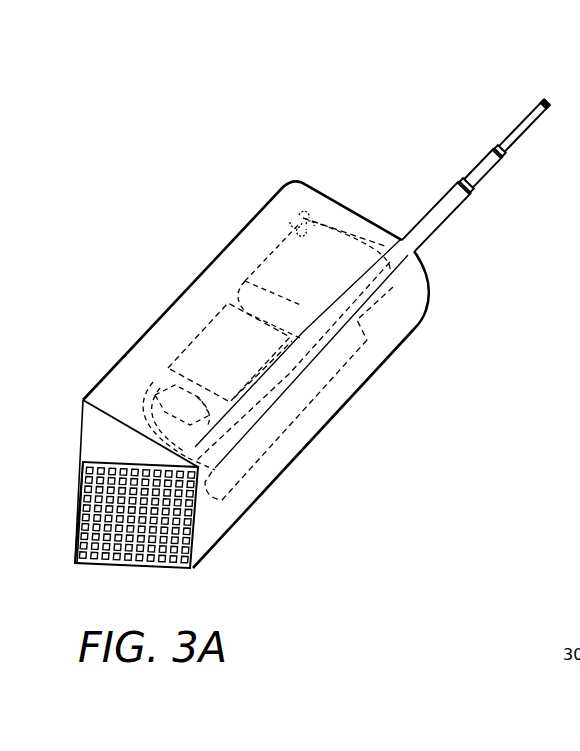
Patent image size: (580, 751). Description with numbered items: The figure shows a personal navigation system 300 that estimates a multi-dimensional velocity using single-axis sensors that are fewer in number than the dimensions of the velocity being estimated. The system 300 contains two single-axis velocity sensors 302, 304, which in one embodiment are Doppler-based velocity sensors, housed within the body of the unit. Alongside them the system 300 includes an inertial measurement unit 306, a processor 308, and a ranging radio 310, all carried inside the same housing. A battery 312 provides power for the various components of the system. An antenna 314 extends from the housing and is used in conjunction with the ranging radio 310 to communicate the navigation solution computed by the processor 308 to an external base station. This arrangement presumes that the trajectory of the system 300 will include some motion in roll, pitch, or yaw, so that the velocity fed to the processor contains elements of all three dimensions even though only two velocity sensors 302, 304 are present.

The personal navigation system 300 is at (333, 92).
The single-axis velocity sensor 302 is at (76, 460).
The single-axis velocity sensor 304 is at (186, 518).
The inertial measurement unit 306 is at (138, 398).
The processor 308 is at (188, 342).
The ranging radio 310 is at (333, 394).
The battery 312 is at (258, 250).
The antenna 314 is at (510, 147).